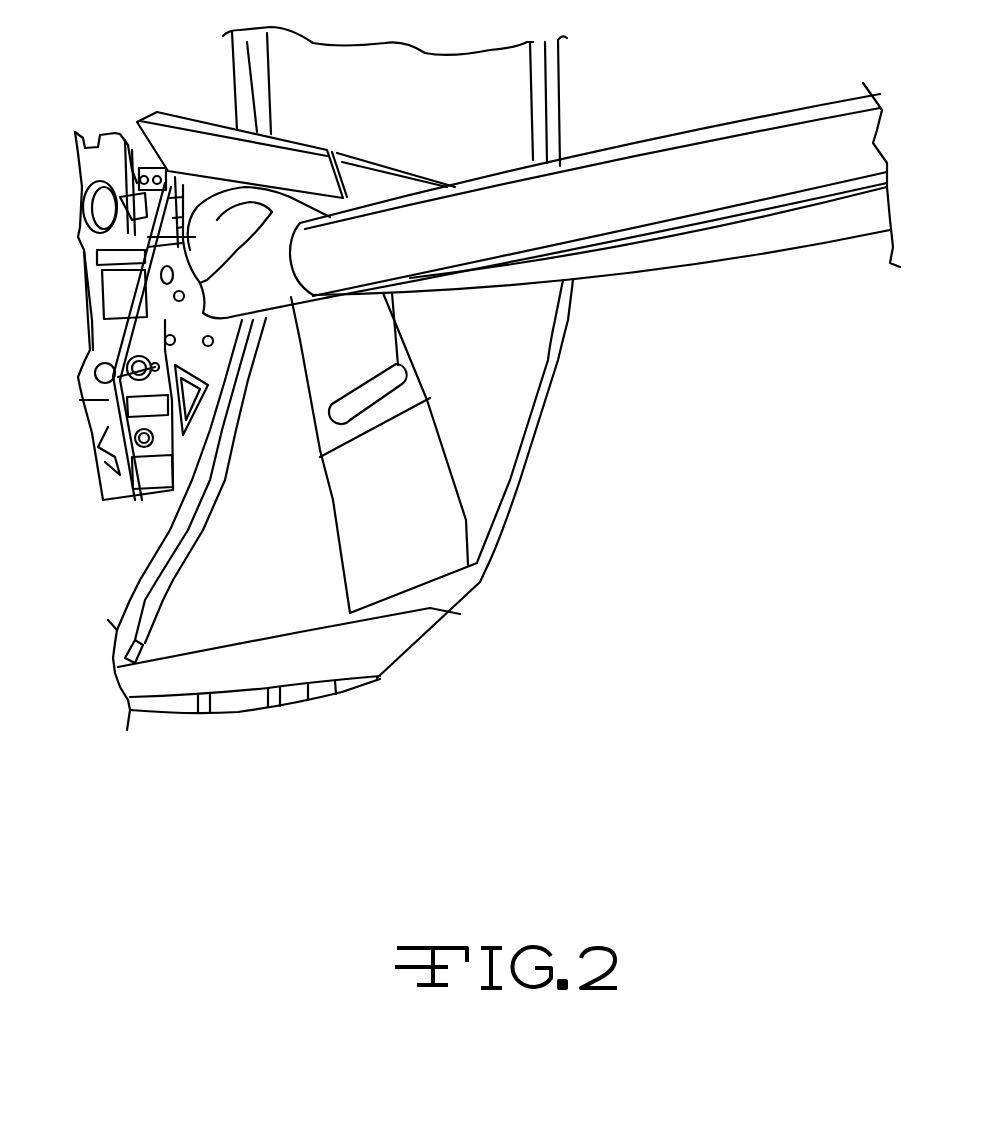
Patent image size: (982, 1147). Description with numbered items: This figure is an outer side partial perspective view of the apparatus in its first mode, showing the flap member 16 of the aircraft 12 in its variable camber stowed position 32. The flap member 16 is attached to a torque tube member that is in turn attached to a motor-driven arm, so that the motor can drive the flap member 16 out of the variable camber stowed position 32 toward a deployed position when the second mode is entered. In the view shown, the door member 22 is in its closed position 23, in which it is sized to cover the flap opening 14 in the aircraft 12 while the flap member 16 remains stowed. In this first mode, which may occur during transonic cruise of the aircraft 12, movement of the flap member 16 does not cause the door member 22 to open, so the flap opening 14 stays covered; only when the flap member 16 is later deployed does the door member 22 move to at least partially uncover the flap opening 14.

The aircraft 12 is at (307, 657).
The flap opening 14 is at (333, 384).
The flap member 16 is at (677, 183).
The door member 22 is at (290, 463).
The closed position 23 is at (347, 351).
The variable camber stowed position 32 is at (763, 237).